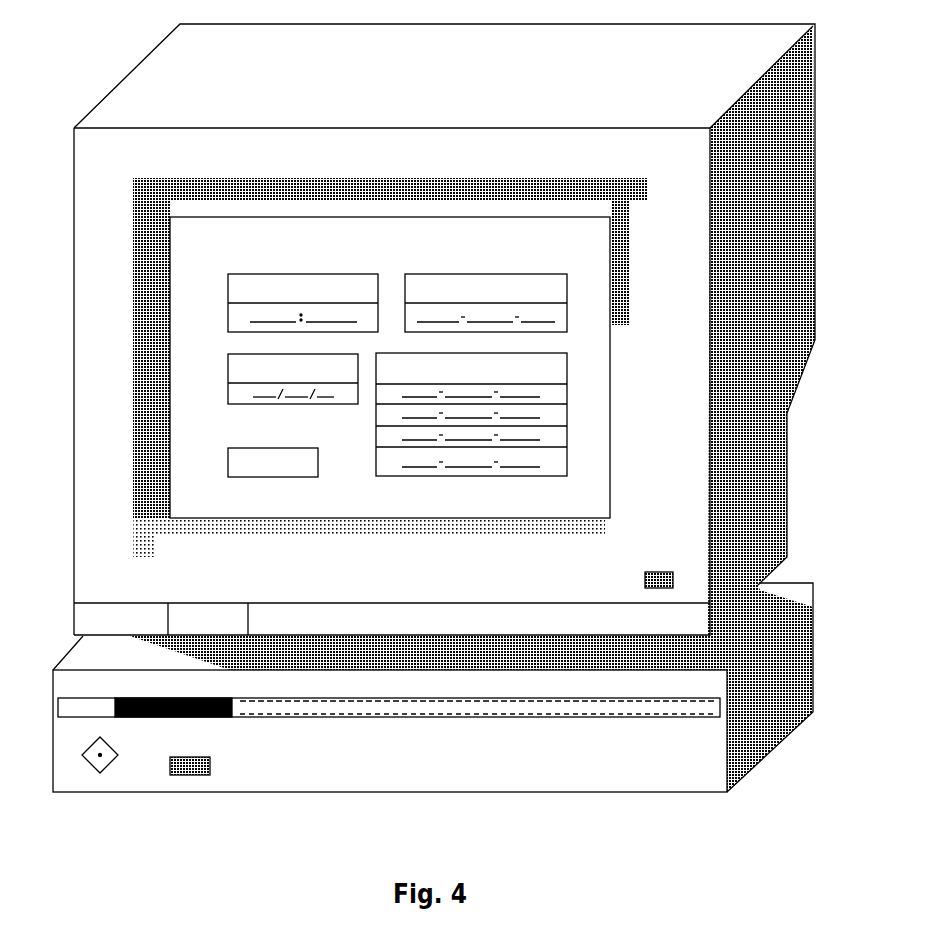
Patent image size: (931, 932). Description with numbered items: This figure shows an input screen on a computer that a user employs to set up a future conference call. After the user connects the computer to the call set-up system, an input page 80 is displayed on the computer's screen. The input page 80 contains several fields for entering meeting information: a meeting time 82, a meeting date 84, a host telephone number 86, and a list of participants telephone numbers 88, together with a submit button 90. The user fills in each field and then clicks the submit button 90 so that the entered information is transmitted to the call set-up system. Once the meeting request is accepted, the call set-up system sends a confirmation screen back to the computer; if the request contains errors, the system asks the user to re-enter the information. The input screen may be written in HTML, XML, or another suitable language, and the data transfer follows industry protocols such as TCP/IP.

The input page 80 is at (200, 252).
The meeting time 82 is at (215, 318).
The meeting date 84 is at (215, 376).
The host telephone number 86 is at (580, 318).
The list of participants telephone numbers 88 is at (580, 418).
The submit button 90 is at (212, 447).